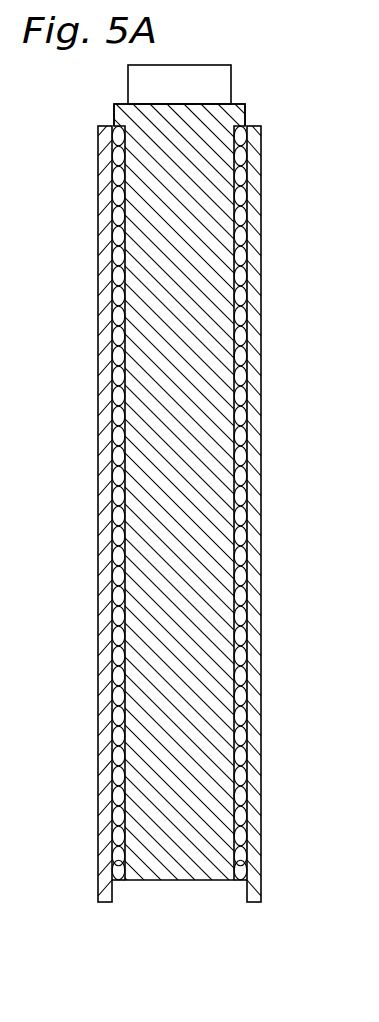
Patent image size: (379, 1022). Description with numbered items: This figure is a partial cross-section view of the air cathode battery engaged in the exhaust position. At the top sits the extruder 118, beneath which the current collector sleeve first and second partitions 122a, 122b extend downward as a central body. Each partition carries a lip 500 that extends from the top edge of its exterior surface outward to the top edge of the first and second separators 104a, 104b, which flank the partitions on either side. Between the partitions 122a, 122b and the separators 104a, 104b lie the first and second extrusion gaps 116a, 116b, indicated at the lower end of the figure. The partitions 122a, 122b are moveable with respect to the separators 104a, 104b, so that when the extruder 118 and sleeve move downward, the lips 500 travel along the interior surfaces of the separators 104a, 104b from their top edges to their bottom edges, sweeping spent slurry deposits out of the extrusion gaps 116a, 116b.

The extruder 118 is at (179, 65).
The lip 500 is at (124, 103).
The second separator 104b is at (97, 317).
The first separator 104a is at (262, 317).
The current collector sleeve second partition 122b is at (126, 382).
The current collector sleeve first partition 122a is at (232, 463).
The second extrusion gap 116b is at (121, 877).
The first extrusion gap 116a is at (238, 877).